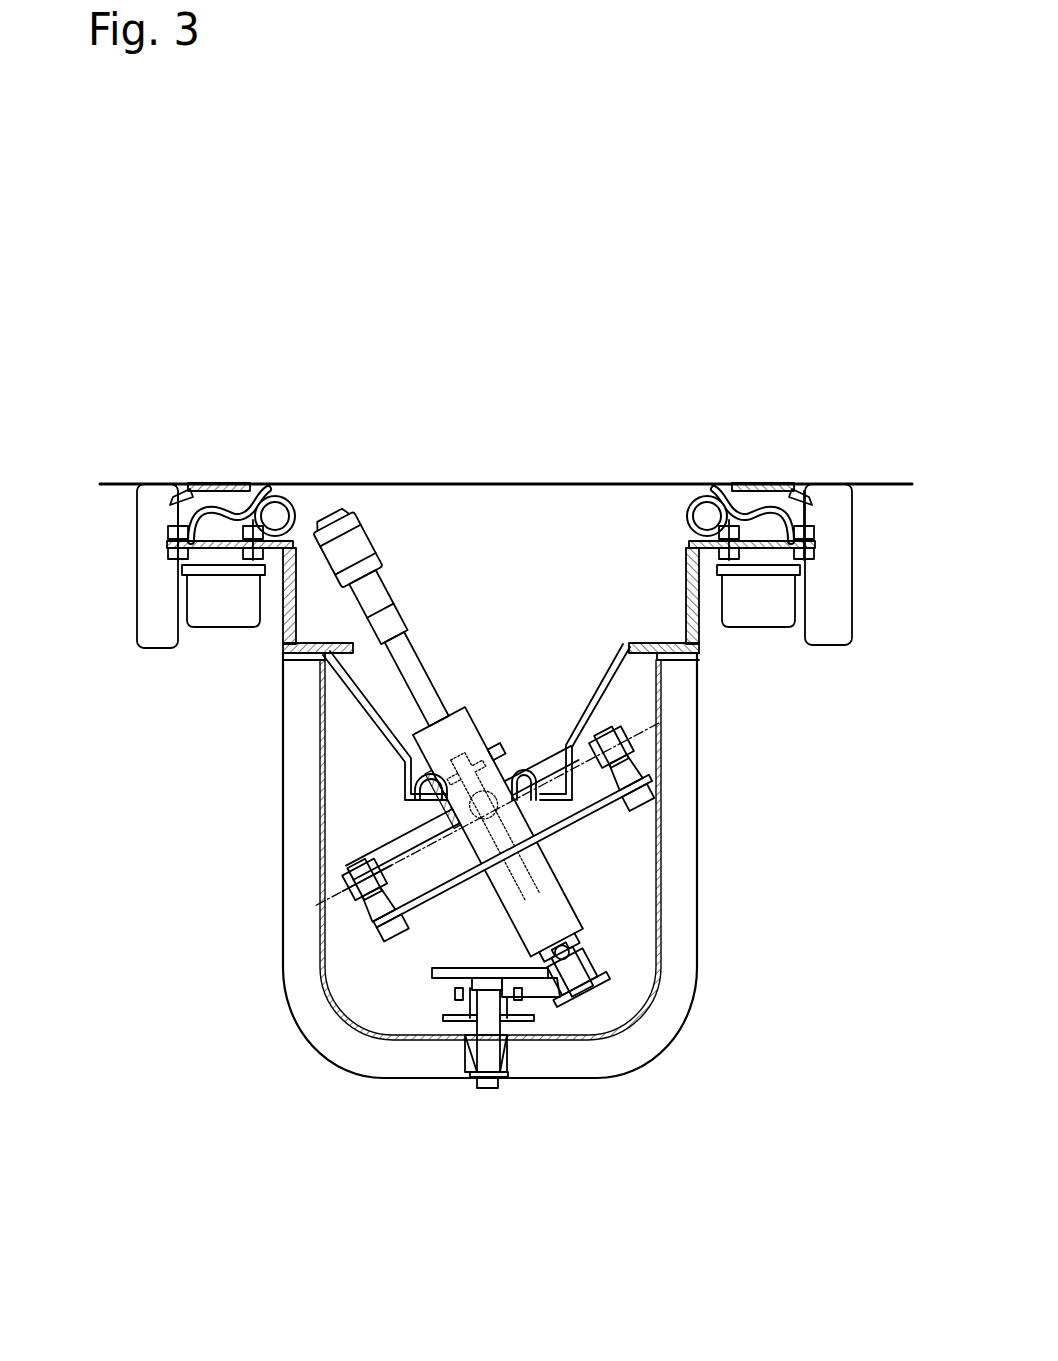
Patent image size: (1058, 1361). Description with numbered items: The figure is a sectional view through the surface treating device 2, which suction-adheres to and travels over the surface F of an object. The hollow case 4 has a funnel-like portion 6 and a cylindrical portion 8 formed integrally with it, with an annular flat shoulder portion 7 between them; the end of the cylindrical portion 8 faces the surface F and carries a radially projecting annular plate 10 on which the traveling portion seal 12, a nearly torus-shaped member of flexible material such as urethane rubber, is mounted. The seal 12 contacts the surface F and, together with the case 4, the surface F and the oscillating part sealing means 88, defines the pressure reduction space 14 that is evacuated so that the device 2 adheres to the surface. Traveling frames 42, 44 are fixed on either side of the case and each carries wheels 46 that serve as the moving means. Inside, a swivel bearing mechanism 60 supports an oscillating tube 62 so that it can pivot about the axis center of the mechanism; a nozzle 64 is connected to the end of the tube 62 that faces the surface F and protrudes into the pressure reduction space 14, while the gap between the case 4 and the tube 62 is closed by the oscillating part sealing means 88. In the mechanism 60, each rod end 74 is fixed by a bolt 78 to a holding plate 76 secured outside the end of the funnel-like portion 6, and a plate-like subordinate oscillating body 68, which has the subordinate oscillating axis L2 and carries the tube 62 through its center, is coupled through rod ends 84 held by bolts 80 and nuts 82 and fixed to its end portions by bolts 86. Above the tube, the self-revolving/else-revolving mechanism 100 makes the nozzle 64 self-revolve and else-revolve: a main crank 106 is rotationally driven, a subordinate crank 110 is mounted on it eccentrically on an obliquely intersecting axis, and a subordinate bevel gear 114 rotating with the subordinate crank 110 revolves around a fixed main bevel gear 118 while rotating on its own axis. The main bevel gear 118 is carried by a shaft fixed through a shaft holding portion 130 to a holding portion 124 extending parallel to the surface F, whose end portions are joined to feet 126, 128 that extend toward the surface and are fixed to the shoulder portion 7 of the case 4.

The surface treating device 2 is at (275, 1100).
The case 4 is at (622, 680).
The funnel-like portion 6 is at (380, 705).
The annular flat shoulder portion 7 is at (323, 650).
The cylindrical portion 8 is at (285, 612).
The annular plate 10 is at (232, 545).
The traveling portion seal 12 is at (221, 481).
The pressure reduction space 14 is at (548, 598).
The traveling frame 42 is at (768, 610).
The traveling frame 44 is at (222, 610).
The wheels 46 is at (140, 520).
The swivel bearing mechanism 60 is at (620, 823).
The oscillating tube 62 is at (499, 743).
The nozzle 64 is at (346, 503).
The subordinate oscillating body 68 is at (588, 818).
The rod end 74 is at (490, 952).
The holding plate 76 is at (515, 773).
The bolt 78 is at (500, 770).
The bolt 80 is at (378, 905).
The nut 82 is at (370, 860).
The rod end 84 is at (375, 915).
The bolt 86 is at (398, 942).
The oscillating part sealing means 88 is at (545, 770).
The self-revolving/else-revolving mechanism 100 is at (488, 1097).
The main crank 106 is at (557, 1005).
The subordinate crank 110 is at (592, 957).
The subordinate bevel gear 114 is at (600, 940).
The main bevel gear 118 is at (440, 958).
The holding portion 124 is at (570, 1048).
The foot 126 is at (320, 802).
The foot 128 is at (660, 885).
The shaft holding portion 130 is at (462, 1052).
The surface F is at (460, 494).
The subordinate oscillating axis L2 is at (400, 850).